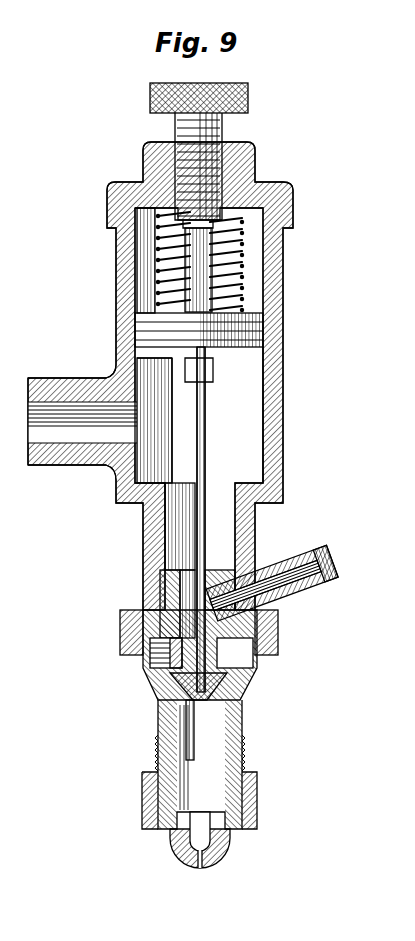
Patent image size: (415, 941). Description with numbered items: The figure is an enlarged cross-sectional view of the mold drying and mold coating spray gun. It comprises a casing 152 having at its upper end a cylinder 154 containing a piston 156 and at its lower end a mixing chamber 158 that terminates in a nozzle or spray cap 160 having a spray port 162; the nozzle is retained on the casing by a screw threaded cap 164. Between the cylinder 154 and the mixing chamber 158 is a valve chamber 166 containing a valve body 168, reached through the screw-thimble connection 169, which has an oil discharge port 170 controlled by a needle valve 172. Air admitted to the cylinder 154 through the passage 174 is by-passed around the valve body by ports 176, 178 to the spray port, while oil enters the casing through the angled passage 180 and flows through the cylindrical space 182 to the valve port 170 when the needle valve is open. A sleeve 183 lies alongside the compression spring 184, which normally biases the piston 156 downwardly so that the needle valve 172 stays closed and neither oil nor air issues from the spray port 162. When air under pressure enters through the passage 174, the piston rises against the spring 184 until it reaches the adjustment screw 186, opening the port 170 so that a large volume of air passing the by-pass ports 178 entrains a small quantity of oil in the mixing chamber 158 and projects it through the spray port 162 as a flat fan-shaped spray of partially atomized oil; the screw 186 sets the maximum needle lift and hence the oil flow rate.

The casing 152 is at (273, 430).
The cylinder 154 is at (260, 390).
The piston 156 is at (265, 335).
The mixing chamber 158 is at (215, 745).
The nozzle or spray cap 160 is at (225, 848).
The spray port 162 is at (200, 866).
The screw threaded cap 164 is at (250, 792).
The valve chamber 166 is at (180, 530).
The valve body 168 is at (257, 665).
The screw-thimble connection 169 is at (280, 616).
The oil discharge port 170 is at (200, 712).
The needle valve 172 is at (197, 660).
The air passage 174 is at (98, 430).
The by-pass port 176 is at (178, 588).
The by-pass port 178 is at (172, 684).
The oil passage 180 is at (262, 570).
The cylindrical space 182 is at (190, 648).
The guide sleeve 183 is at (185, 258).
The compression spring 184 is at (243, 270).
The adjustment screw 186 is at (222, 131).